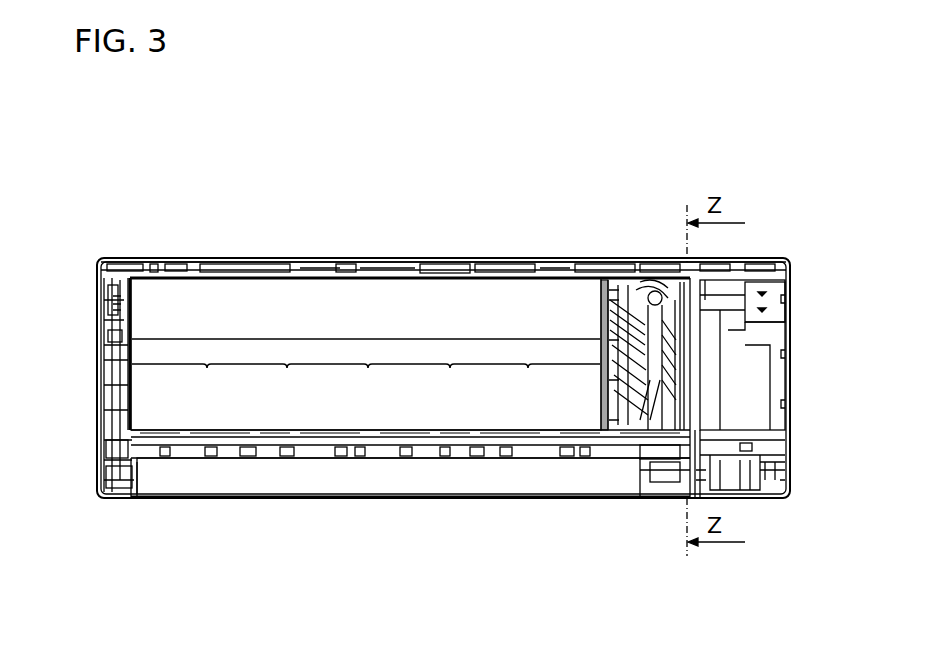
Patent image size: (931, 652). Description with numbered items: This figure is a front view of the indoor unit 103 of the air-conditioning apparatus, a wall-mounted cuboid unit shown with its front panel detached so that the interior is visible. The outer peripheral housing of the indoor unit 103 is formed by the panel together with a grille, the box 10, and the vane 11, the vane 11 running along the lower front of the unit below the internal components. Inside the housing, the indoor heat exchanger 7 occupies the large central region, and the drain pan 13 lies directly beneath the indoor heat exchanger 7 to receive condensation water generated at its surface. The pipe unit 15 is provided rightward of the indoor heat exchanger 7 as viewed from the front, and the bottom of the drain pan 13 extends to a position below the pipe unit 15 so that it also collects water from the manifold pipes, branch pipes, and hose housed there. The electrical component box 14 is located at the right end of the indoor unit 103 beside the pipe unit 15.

The indoor unit 103 is at (695, 180).
The indoor heat exchanger 7 is at (247, 298).
The box 10 is at (307, 268).
The pipe unit 15 is at (630, 258).
The electrical component box 14 is at (765, 258).
The vane 11 is at (338, 488).
The drain pan 13 is at (532, 448).